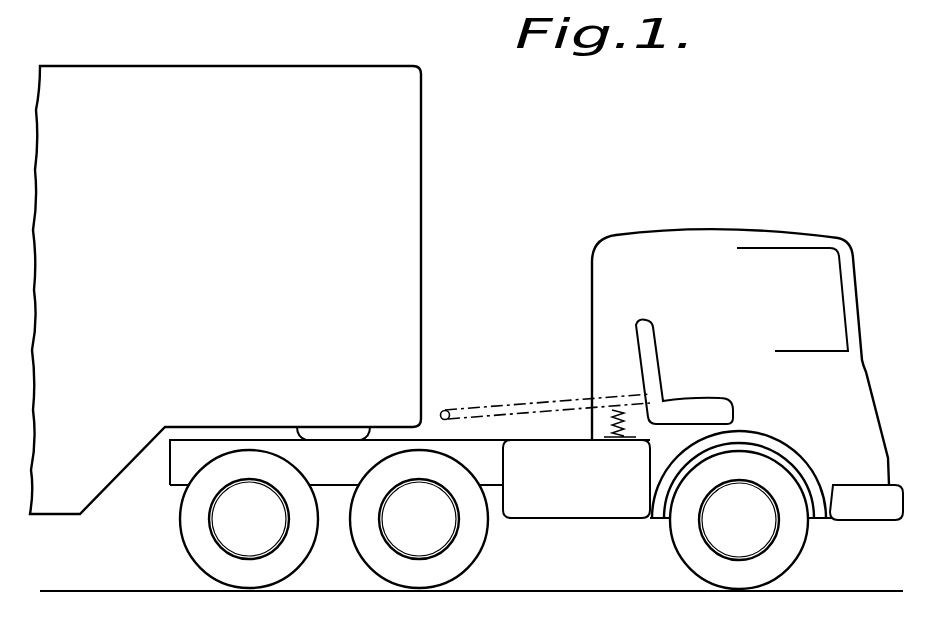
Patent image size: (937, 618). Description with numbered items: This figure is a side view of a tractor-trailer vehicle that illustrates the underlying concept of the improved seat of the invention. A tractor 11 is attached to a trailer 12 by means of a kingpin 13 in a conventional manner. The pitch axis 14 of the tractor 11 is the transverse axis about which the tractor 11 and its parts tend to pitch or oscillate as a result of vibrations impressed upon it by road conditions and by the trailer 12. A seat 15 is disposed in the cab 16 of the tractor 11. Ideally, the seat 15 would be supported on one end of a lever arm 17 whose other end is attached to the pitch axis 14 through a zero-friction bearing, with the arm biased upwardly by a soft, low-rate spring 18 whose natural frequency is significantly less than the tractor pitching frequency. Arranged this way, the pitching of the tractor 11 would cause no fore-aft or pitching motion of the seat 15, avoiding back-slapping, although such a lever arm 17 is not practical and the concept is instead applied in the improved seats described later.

The tractor 11 is at (733, 218).
The trailer 12 is at (270, 66).
The kingpin 13 is at (322, 432).
The pitch axis 14 is at (458, 404).
The seat 15 is at (647, 353).
The cab 16 is at (862, 373).
The lever arm 17 is at (548, 374).
The spring 18 is at (610, 425).